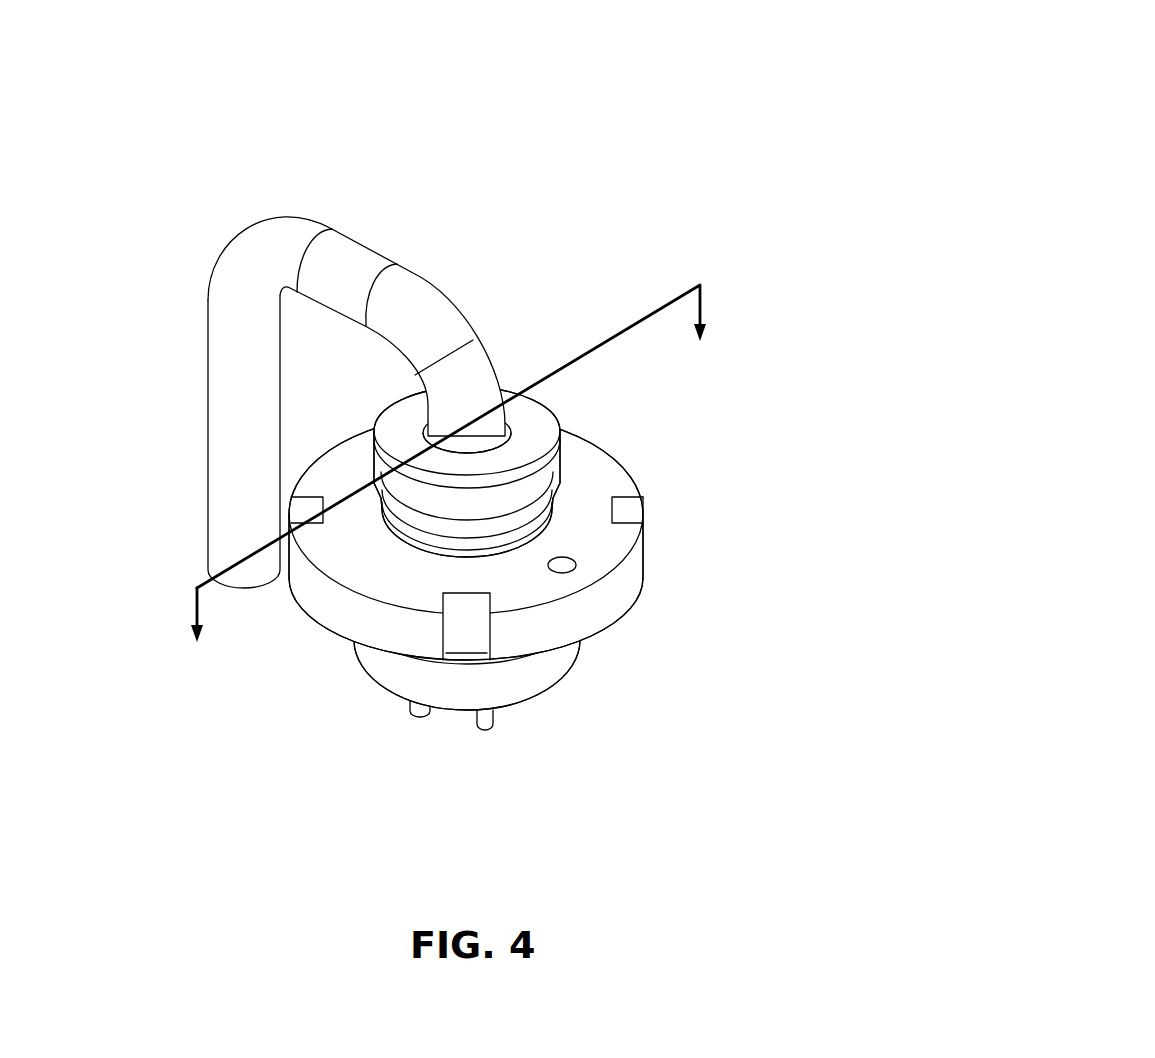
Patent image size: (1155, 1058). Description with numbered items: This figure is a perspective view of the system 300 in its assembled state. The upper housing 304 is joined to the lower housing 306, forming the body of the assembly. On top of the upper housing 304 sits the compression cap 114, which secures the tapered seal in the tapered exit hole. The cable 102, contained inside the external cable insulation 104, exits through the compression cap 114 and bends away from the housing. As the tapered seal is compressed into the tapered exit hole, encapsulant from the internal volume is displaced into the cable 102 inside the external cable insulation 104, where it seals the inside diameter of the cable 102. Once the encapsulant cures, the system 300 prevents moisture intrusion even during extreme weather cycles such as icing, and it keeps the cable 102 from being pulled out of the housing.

The system 300 is at (607, 385).
The cable 102 is at (421, 272).
The external cable insulation 104 is at (227, 420).
The compression cap 114 is at (534, 423).
The upper housing 304 is at (628, 570).
The lower housing 306 is at (402, 693).